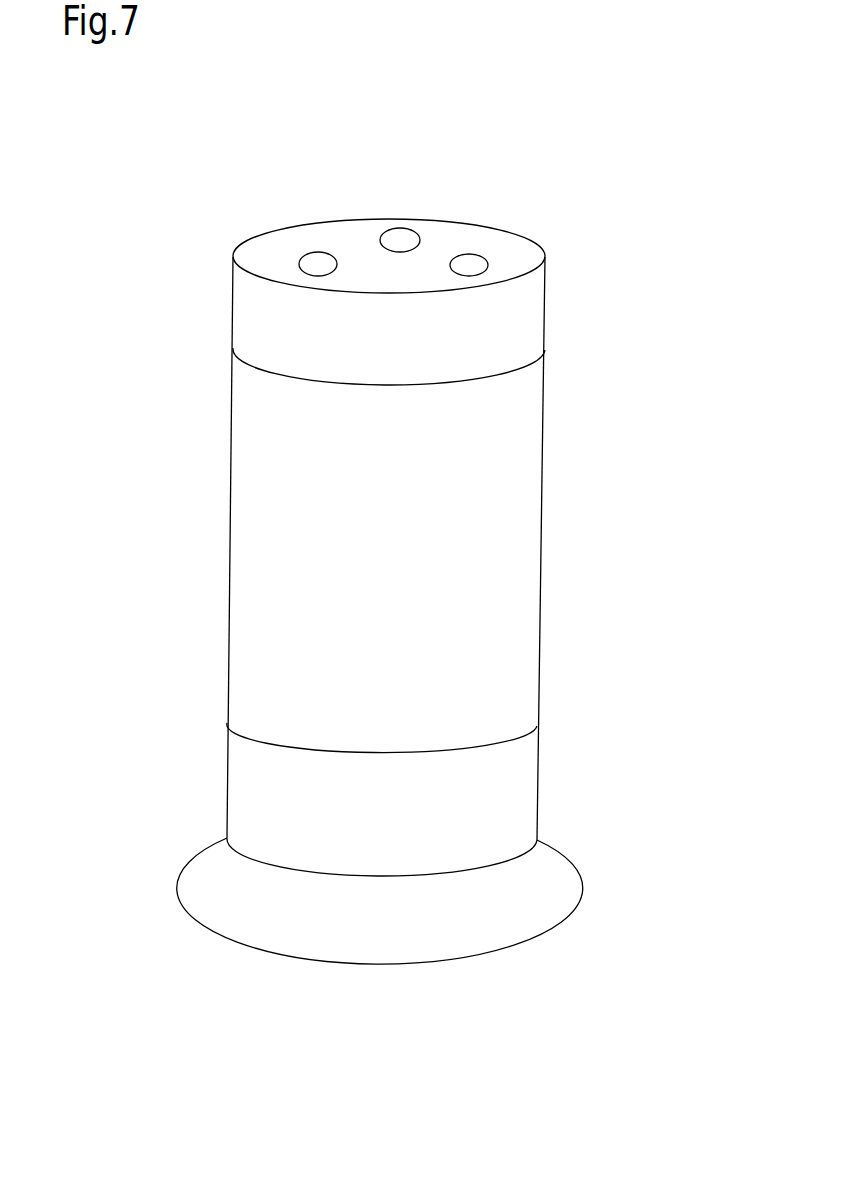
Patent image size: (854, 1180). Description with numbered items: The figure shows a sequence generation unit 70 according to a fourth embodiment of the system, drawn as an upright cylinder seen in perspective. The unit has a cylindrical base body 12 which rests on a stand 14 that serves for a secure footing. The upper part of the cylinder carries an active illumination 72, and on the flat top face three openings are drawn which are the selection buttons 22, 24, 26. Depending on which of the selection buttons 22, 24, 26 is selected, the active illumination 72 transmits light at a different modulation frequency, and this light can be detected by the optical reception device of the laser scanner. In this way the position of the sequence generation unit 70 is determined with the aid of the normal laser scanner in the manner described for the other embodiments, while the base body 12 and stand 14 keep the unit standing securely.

The sequence generation unit 70 is at (644, 210).
The active illumination 72 is at (523, 505).
The selection button 22 is at (320, 261).
The selection button 24 is at (408, 238).
The selection button 26 is at (473, 263).
The cylindrical base body 12 is at (513, 767).
The stand 14 is at (568, 880).